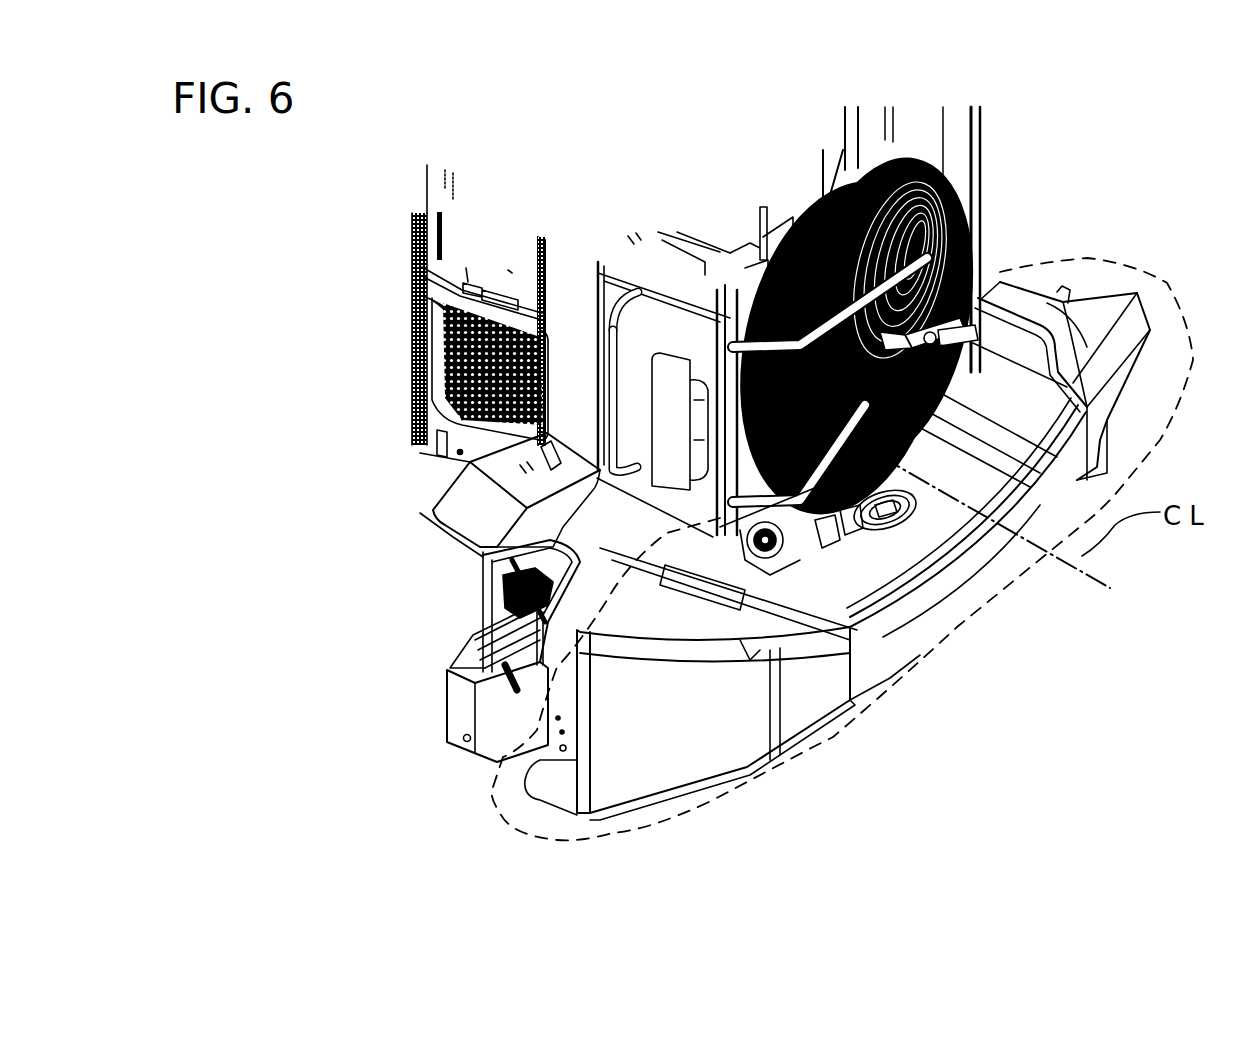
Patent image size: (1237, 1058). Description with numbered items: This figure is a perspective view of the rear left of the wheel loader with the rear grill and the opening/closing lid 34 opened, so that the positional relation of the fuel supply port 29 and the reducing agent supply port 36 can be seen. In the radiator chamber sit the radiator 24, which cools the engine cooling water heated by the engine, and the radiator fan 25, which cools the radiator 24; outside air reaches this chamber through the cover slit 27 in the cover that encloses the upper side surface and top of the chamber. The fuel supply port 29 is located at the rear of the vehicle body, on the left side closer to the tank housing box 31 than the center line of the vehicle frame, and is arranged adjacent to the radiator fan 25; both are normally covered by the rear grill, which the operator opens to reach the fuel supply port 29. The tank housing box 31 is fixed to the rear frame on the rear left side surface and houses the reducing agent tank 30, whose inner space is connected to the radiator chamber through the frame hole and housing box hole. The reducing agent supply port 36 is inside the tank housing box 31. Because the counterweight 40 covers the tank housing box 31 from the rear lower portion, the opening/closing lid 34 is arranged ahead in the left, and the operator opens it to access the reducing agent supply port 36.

The radiator 24 is at (900, 128).
The radiator fan 25 is at (950, 180).
The cover slit 27 is at (432, 340).
The fuel supply port 29 is at (880, 620).
The reducing agent tank 30 is at (502, 600).
The tank housing box 31 is at (447, 695).
The opening/closing lid 34 is at (430, 500).
The reducing agent supply port 36 is at (515, 565).
The counterweight 40 is at (1010, 580).